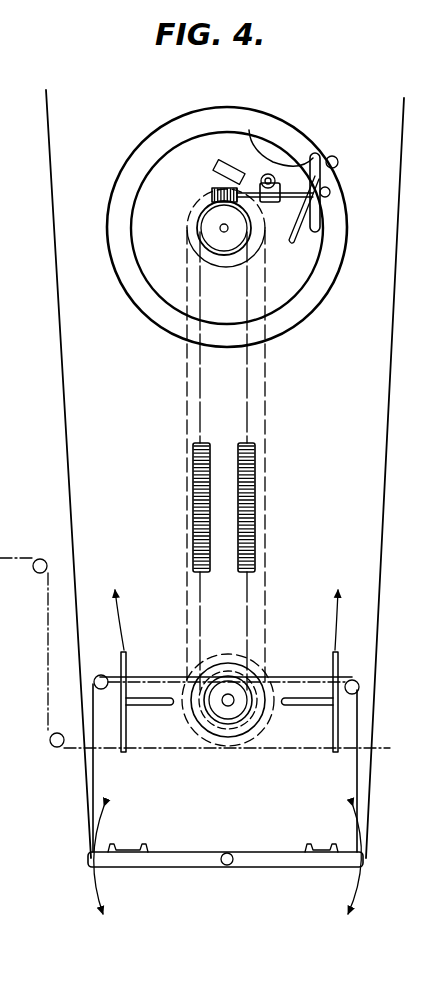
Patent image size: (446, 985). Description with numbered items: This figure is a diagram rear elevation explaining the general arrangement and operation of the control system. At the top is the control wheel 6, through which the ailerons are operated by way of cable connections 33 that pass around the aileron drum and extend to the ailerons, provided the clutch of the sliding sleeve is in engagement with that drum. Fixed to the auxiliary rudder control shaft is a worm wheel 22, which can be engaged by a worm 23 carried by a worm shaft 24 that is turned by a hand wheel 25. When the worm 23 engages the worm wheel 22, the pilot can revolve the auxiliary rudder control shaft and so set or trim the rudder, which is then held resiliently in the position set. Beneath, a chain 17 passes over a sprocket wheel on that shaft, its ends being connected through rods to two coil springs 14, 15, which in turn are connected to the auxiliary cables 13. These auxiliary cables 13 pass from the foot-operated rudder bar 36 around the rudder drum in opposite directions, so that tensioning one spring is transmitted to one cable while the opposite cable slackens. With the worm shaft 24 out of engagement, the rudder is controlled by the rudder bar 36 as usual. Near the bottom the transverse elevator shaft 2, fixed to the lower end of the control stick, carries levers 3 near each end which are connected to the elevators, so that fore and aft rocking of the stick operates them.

The elevator shaft 2 is at (156, 706).
The lever 3 is at (333, 720).
The control wheel 6 is at (288, 313).
The auxiliary cables 13 is at (357, 782).
The coil spring 14 is at (198, 502).
The coil spring 15 is at (256, 500).
The chain 17 is at (247, 388).
The worm wheel 22 is at (200, 232).
The worm 23 is at (213, 190).
The worm shaft 24 is at (287, 190).
The hand wheel 25 is at (249, 130).
The cable connections 33 is at (207, 743).
The rudder bar 36 is at (198, 858).